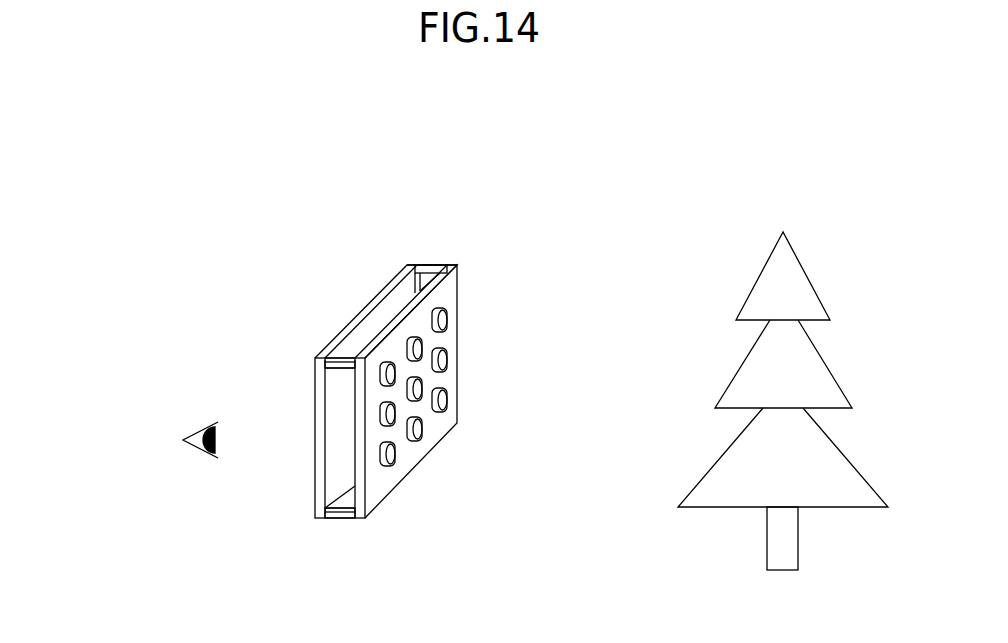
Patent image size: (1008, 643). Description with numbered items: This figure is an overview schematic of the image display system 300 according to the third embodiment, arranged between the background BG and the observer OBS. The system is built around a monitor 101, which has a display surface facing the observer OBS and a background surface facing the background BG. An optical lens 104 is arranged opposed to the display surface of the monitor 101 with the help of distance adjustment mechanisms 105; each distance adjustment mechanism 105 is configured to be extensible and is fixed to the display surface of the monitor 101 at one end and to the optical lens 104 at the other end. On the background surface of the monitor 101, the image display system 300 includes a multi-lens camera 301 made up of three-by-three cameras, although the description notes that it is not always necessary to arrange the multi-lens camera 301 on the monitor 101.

The image display system 300 is at (568, 92).
The monitor 101 is at (537, 257).
The optical lens 104 is at (372, 305).
The distance adjustment mechanism 105 is at (343, 548).
The multi-lens camera 301 is at (392, 412).
The observer OBS is at (203, 428).
The background BG is at (793, 248).